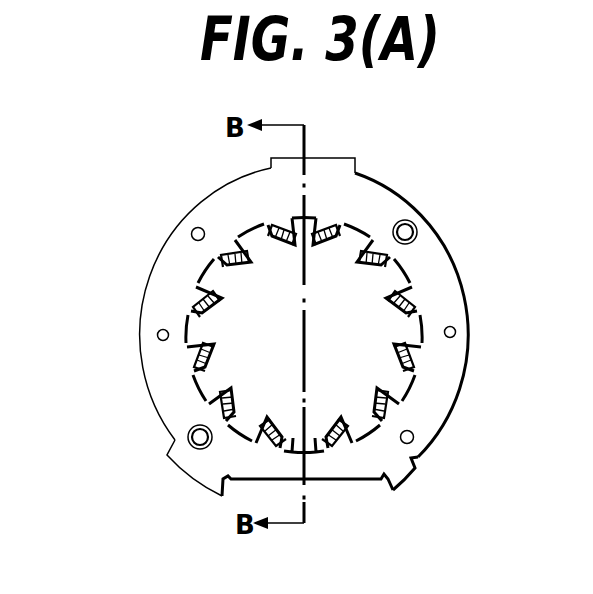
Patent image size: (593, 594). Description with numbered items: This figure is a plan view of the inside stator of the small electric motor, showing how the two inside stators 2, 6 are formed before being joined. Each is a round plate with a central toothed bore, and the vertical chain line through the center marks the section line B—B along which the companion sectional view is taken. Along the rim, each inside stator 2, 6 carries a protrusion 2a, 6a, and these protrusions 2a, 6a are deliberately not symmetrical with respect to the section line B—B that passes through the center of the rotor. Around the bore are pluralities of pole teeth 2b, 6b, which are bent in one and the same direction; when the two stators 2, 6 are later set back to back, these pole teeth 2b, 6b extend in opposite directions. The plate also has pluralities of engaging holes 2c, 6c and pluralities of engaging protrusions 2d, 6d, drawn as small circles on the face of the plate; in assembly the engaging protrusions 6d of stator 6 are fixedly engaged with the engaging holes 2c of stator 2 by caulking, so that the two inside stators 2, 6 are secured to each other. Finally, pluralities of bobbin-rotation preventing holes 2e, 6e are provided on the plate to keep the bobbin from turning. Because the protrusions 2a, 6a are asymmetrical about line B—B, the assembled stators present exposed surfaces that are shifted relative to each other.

The inside stator 2 is at (304, 282).
The inside stator 6 is at (318, 202).
The protrusion 2a is at (287, 337).
The protrusion 6a is at (357, 170).
The pole teeth 2b is at (297, 334).
The pole teeth 6b is at (188, 301).
The engaging holes 2c is at (297, 343).
The engaging holes 6c is at (192, 233).
The engaging protrusions 2d is at (276, 330).
The engaging protrusions 6d is at (402, 233).
The bobbin-rotation preventing holes 2e is at (296, 358).
The bobbin-rotation preventing holes 6e is at (160, 338).